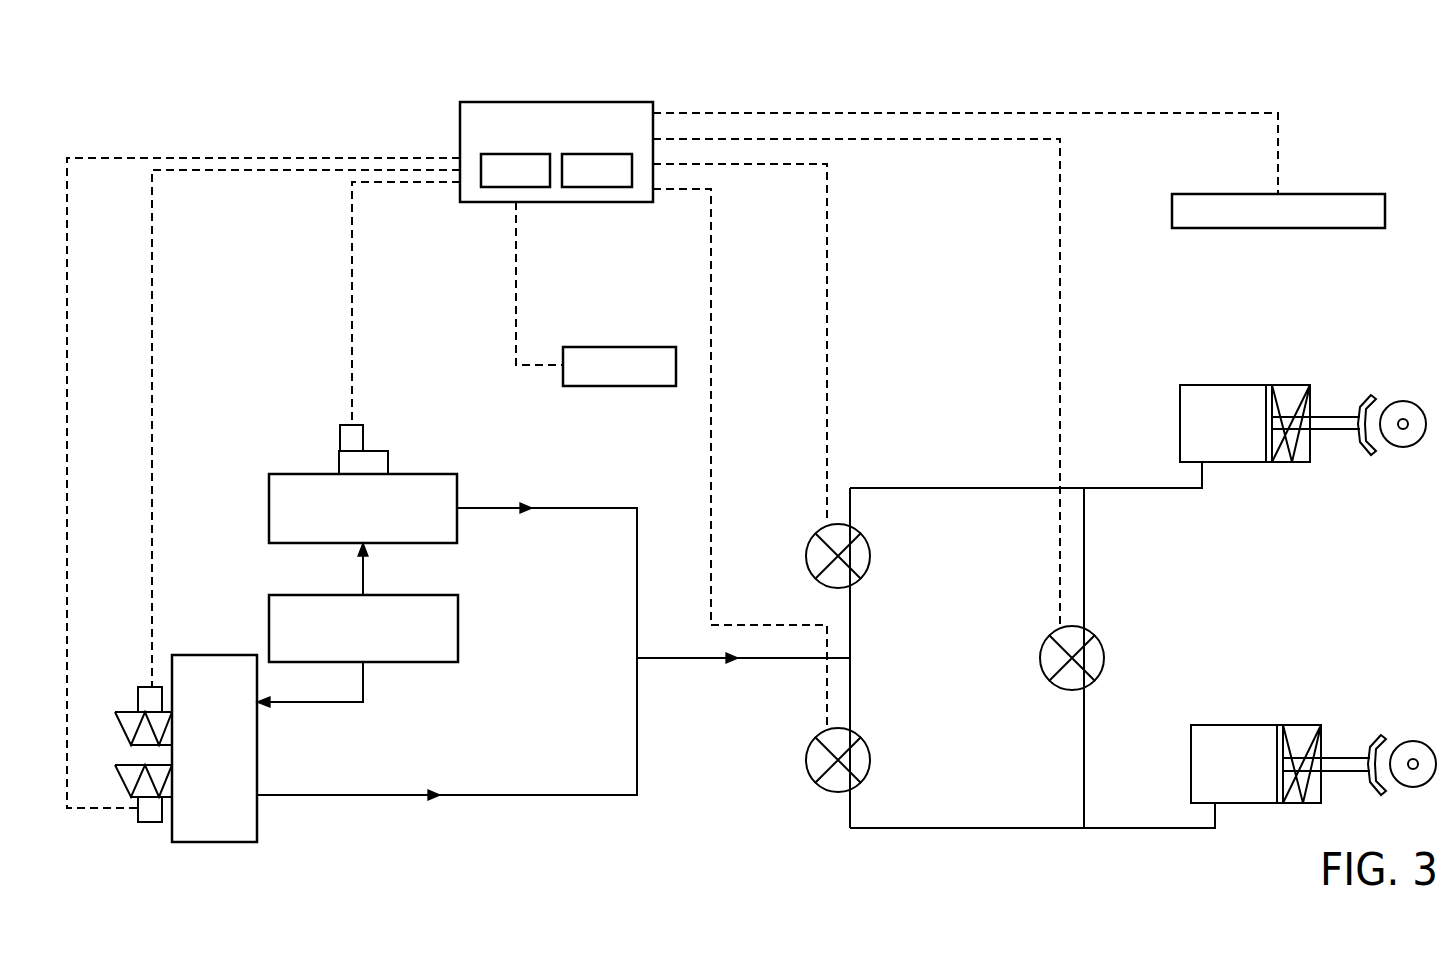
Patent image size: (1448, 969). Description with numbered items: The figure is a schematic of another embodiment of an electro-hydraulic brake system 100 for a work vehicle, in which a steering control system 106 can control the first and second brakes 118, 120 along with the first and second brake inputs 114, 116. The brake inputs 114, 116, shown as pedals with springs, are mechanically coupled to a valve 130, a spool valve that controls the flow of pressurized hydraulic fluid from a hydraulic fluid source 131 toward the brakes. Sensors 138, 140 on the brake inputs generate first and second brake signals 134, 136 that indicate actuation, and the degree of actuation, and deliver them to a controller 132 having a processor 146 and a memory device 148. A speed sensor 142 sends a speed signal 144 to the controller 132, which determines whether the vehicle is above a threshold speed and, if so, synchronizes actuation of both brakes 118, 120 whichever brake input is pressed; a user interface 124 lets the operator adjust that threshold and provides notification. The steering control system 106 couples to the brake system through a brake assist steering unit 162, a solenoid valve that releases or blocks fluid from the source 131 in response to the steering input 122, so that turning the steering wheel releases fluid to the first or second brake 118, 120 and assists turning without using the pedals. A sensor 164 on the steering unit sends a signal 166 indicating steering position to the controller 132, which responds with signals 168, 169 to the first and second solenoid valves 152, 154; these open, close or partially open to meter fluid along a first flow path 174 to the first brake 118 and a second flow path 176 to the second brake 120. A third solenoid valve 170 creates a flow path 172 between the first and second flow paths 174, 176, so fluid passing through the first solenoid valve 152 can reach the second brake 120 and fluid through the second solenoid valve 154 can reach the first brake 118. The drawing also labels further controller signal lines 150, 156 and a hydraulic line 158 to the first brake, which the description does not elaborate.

The electro-hydraulic brake system 100 is at (703, 835).
The steering control system 106 is at (278, 460).
The first brake input 114 is at (131, 713).
The second brake input 116 is at (128, 790).
The first brake 118 is at (1290, 385).
The second brake 120 is at (1300, 725).
The steering input 122 is at (339, 463).
The user interface 124 is at (1278, 228).
The valve 130 is at (218, 842).
The hydraulic fluid source 131 is at (378, 662).
The controller 132 is at (556, 102).
The first brake signal 134 is at (296, 172).
The second brake signal 136 is at (248, 158).
The sensor 138 is at (148, 687).
The sensor 140 is at (148, 822).
The speed sensor 142 is at (620, 386).
The speed signal 144 is at (516, 277).
The processor 146 is at (528, 187).
The memory device 148 is at (611, 187).
The control line to user interface 150 is at (830, 92).
The first solenoid valve 152 is at (870, 557).
The second solenoid valve 154 is at (870, 760).
The control line to first brake valve 156 is at (740, 343).
The brake fluid line 158 is at (1128, 492).
The brake assist steering unit 162 is at (269, 510).
The sensor 164 is at (363, 437).
The signal 166 is at (422, 184).
The signal 168 is at (740, 458).
The signal 169 is at (856, 382).
The third solenoid valve 170 is at (1103, 660).
The flow path 172 is at (1084, 757).
The first flow path 174 is at (1005, 488).
The second flow path 176 is at (978, 830).